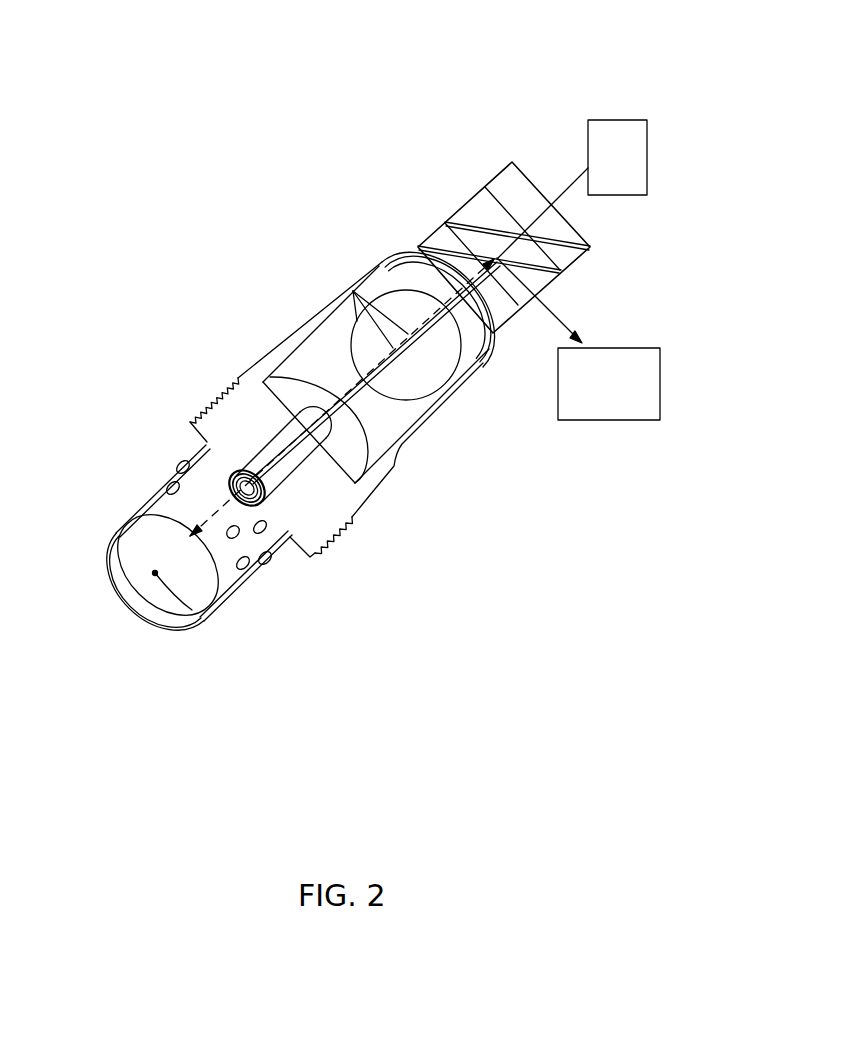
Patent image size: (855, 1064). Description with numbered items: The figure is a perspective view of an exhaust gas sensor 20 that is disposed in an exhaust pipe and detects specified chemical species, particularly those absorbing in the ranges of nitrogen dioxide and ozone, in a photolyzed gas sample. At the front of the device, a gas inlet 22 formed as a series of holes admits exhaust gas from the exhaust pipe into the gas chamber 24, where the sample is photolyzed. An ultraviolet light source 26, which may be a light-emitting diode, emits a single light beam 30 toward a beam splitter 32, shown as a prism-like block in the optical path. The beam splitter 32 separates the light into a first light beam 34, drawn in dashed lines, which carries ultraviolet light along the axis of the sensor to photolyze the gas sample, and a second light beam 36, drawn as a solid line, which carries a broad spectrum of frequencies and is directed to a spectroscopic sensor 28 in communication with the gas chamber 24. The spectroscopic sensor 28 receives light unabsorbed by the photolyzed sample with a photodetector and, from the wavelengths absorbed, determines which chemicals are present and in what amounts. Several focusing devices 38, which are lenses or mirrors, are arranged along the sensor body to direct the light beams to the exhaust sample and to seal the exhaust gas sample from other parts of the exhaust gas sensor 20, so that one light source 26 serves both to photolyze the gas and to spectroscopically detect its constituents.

The exhaust gas sensor 20 is at (525, 54).
The gas inlet 22 is at (160, 480).
The gas chamber 24 is at (223, 580).
The ultraviolet light source 26 is at (627, 120).
The spectroscopic sensor 28 is at (618, 420).
The light beam 30 is at (568, 185).
The beam splitter 32 is at (480, 240).
The first light beam 34 is at (325, 400).
The second light beam 36 is at (560, 312).
The focusing devices 38 is at (360, 315).